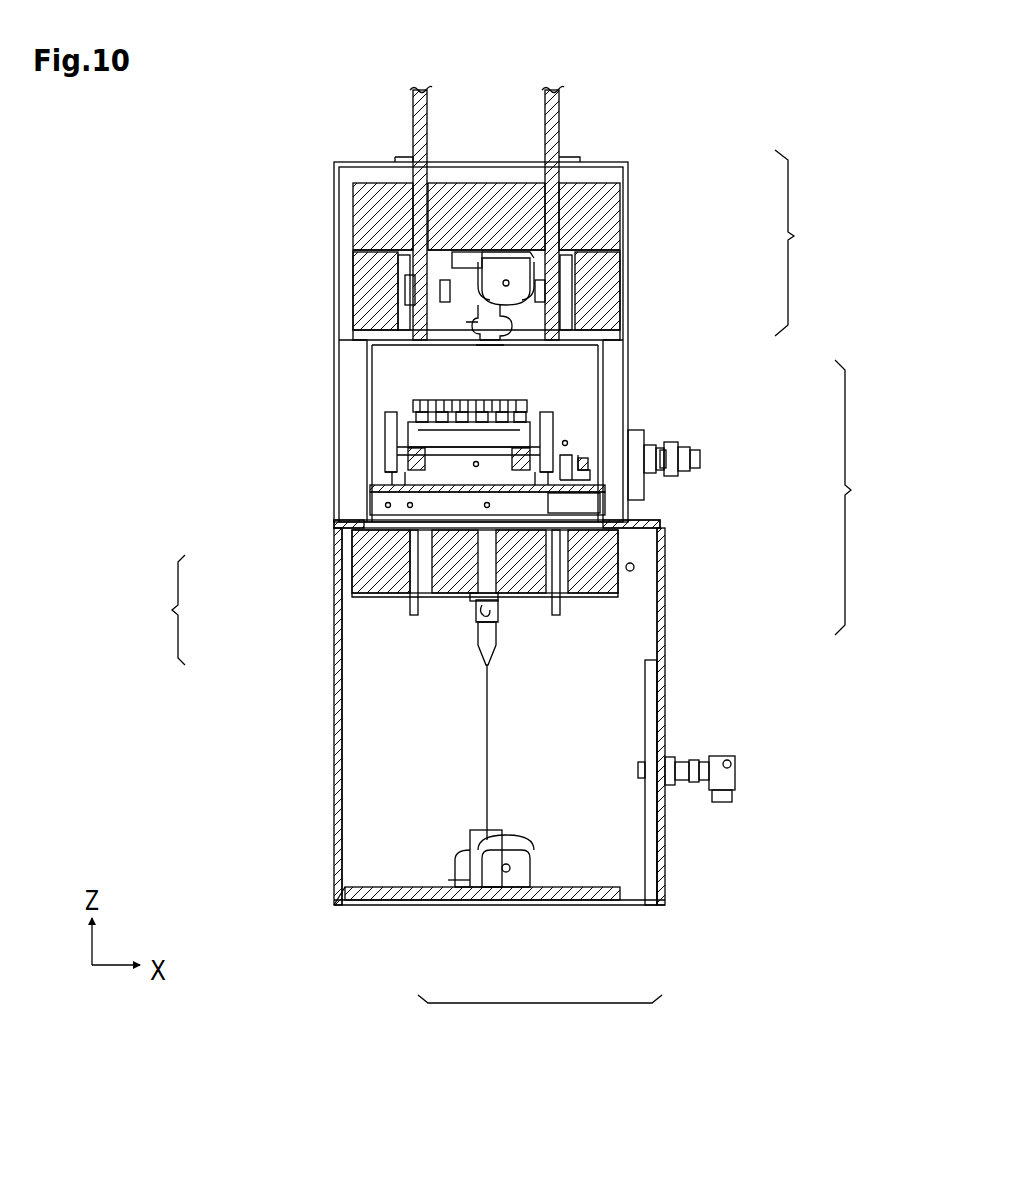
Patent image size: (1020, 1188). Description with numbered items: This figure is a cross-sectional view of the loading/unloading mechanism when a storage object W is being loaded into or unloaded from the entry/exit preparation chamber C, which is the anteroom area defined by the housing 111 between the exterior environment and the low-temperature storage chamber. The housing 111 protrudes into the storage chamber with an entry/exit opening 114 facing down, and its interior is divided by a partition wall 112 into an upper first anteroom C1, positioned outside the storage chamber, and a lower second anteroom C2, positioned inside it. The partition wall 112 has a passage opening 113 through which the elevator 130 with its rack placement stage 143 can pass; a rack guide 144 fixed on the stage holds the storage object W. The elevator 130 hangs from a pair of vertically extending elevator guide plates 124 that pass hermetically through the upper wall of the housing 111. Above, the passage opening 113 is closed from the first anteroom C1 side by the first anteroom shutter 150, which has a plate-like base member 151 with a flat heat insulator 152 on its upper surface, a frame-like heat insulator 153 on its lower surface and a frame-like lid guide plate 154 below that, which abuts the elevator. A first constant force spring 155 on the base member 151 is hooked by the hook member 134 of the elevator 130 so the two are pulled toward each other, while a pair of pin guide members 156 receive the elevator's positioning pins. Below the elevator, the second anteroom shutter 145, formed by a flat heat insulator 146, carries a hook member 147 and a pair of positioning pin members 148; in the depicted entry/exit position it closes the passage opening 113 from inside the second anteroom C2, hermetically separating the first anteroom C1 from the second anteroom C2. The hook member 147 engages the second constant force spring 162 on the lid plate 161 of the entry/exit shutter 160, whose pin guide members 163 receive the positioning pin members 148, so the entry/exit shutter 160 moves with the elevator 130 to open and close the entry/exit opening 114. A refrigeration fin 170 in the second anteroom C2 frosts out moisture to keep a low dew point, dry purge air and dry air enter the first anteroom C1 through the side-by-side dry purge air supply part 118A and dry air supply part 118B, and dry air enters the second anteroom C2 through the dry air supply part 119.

The housing 111 is at (340, 750).
The partition wall 112 is at (345, 524).
The passage opening 113 is at (622, 535).
The entry/exit opening 114 is at (345, 905).
The dry purge air supply part 118A is at (700, 450).
The dry air supply part 118B is at (700, 466).
The dry air supply part 119 is at (738, 770).
The elevator guide plates 124 is at (413, 117).
The elevator 130 is at (366, 357).
The hook member 134 is at (464, 322).
The rack placement stage 143 is at (396, 489).
The rack guide 144 is at (395, 453).
The second anteroom shutter 145 is at (316, 690).
The heat insulator 146 is at (356, 540).
The hook member 147 is at (478, 612).
The positioning pin members 148 is at (482, 650).
The first anteroom shutter 150 is at (503, 199).
The base member 151 is at (622, 237).
The heat insulator 152 is at (622, 219).
The heat insulator 153 is at (622, 287).
The lid guide plate 154 is at (622, 332).
The first constant force spring 155 is at (505, 262).
The pin guide members 156 is at (478, 280).
The entry/exit shutter 160 is at (499, 933).
The lid plate 161 is at (582, 903).
The second constant force spring 162 is at (500, 903).
The pin guide members 163 is at (462, 903).
The refrigeration fin 170 is at (652, 690).
The storage object W is at (410, 395).
The entry/exit preparation chamber C is at (848, 497).
The first anteroom C1 is at (612, 361).
The second anteroom C2 is at (643, 622).